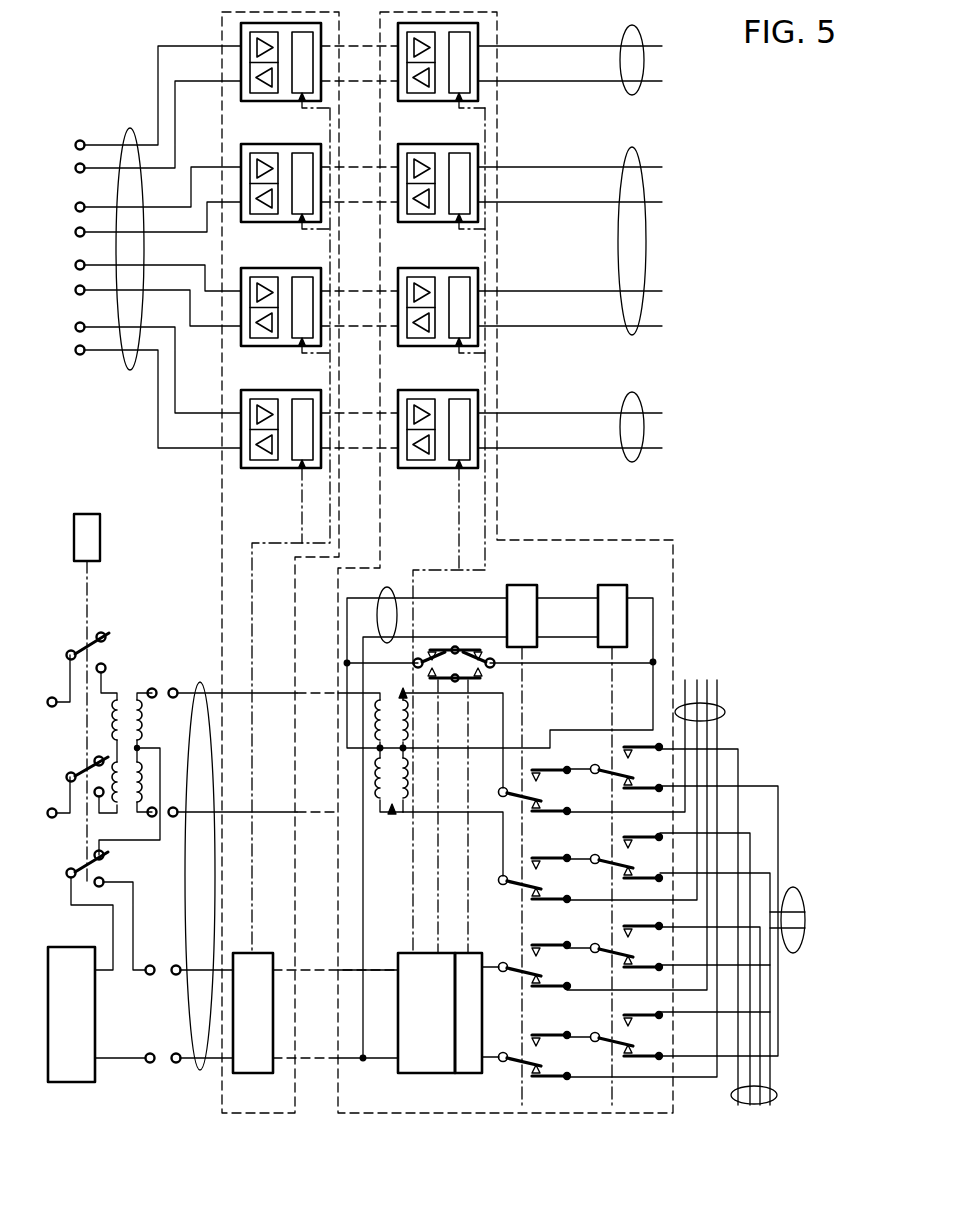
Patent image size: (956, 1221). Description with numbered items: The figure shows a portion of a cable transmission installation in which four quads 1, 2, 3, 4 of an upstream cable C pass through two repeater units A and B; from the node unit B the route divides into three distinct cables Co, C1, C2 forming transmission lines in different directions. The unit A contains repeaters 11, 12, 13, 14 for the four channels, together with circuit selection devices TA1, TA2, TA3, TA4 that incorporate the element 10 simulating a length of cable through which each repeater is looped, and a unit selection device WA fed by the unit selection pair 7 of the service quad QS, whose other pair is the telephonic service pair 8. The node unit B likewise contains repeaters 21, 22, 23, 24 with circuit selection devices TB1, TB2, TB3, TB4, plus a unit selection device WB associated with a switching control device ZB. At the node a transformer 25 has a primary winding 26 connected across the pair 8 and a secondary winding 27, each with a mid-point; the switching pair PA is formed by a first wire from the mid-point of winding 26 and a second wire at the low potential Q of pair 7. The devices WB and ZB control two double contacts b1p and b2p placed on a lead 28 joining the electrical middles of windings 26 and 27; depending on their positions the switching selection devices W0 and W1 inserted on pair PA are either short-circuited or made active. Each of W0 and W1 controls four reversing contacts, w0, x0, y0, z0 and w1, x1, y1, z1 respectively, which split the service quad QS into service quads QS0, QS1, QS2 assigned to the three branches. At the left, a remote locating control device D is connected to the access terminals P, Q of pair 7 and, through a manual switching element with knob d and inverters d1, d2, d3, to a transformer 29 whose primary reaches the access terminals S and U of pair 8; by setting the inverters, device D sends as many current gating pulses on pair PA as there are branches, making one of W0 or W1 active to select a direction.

The quad 1 is at (149, 109).
The quad 2 is at (149, 202).
The quad 3 is at (149, 294).
The quad 4 is at (149, 386).
The unit selection pair 7 is at (177, 1052).
The telephonic service pair 8 is at (178, 792).
The cable-length simulating element 10 is at (403, 692).
The repeater 11 is at (260, 93).
The repeater 12 is at (260, 215).
The repeater 13 is at (260, 339).
The repeater 14 is at (260, 461).
The repeater 21 is at (417, 93).
The repeater 22 is at (417, 215).
The repeater 23 is at (417, 339).
The repeater 24 is at (417, 461).
The transformer 25 is at (382, 812).
The primary winding 26 is at (374, 782).
The secondary winding 27 is at (411, 766).
The lead 28 is at (590, 664).
The transformer 29 is at (125, 818).
The repeater unit A is at (222, 27).
The node unit B is at (497, 32).
The cable C is at (130, 127).
The cable Co is at (644, 58).
The cable C1 is at (646, 238).
The cable C2 is at (644, 426).
The remote locating control device D is at (70, 949).
The access terminal P is at (103, 985).
The access terminal Q is at (120, 1046).
The access terminal S is at (57, 681).
The access terminal U is at (57, 797).
The control knob d is at (87, 540).
The inverter d1 is at (94, 762).
The inverter d2 is at (110, 868).
The inverter d3 is at (112, 642).
The service quad QS is at (200, 682).
The service quad QS0 is at (692, 706).
The service quad QS1 is at (791, 908).
The service quad QS2 is at (732, 1099).
The switching pair PA is at (387, 586).
The circuit selection device TA1 is at (306, 34).
The circuit selection device TA2 is at (312, 128).
The circuit selection device TA3 is at (312, 251).
The circuit selection device TA4 is at (312, 374).
The circuit selection device TB1 is at (470, 88).
The circuit selection device TB2 is at (469, 128).
The circuit selection device TB3 is at (469, 251).
The circuit selection device TB4 is at (469, 374).
The switching selection device W0 is at (540, 562).
The switching selection device W1 is at (626, 562).
The unit selection device WA is at (268, 1078).
The unit selection device WB is at (426, 1056).
The switching control device ZB is at (472, 1058).
The double contact b1p is at (446, 618).
The double contact b2p is at (494, 618).
The inverter contact w0 is at (538, 790).
The inverter contact w1 is at (630, 770).
The inverter contact x0 is at (538, 878).
The inverter contact x1 is at (630, 855).
The inverter contact y0 is at (538, 965).
The inverter contact y1 is at (630, 944).
The inverter contact z0 is at (538, 1055).
The inverter contact z1 is at (630, 1033).